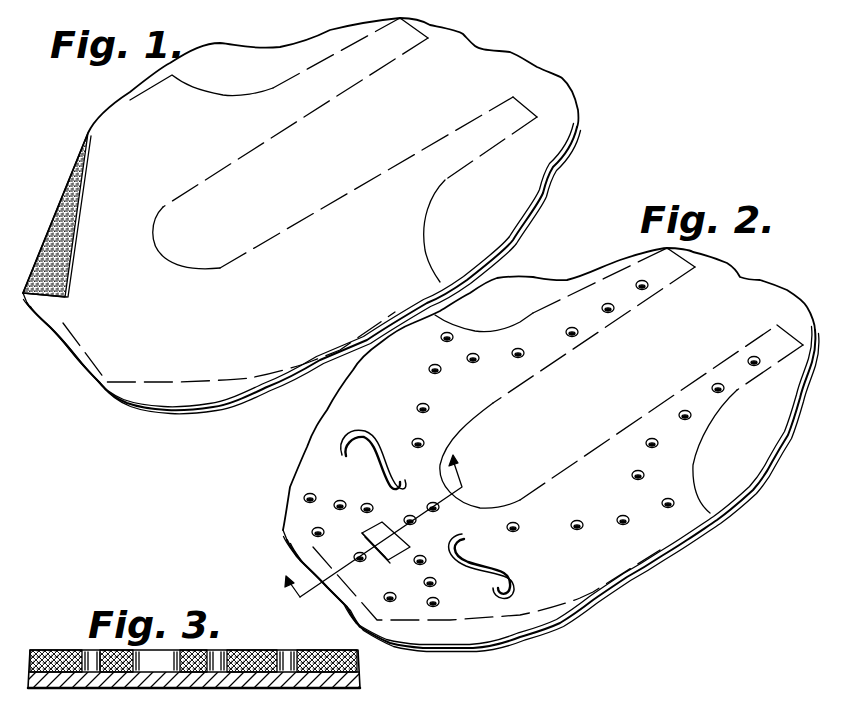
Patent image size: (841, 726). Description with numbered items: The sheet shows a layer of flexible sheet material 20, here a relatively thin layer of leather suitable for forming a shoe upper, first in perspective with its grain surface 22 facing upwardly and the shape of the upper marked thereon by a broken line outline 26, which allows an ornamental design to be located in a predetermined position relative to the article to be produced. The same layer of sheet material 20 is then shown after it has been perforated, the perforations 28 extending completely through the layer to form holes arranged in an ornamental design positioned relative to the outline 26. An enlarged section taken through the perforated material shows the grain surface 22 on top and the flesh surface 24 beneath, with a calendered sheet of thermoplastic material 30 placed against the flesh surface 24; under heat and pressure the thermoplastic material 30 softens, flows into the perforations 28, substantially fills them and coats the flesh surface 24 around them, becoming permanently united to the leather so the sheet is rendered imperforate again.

In FIG. 1, the layer of sheet material 20 is at (575, 66).
In FIG. 2, the layer of sheet material 20 is at (740, 277).
In FIG. 3, the layer of sheet material 20 is at (30, 658).
In FIG. 1, the grain surface 22 is at (538, 152).
In FIG. 2, the grain surface 22 is at (732, 476).
In FIG. 3, the grain surface 22 is at (63, 646).
In FIG. 1, the flesh surface 24 is at (63, 200).
In FIG. 3, the flesh surface 24 is at (267, 678).
In FIG. 1, the broken line outline 26 is at (259, 65).
In FIG. 2, the broken line outline 26 is at (543, 290).
In FIG. 2, the perforations 28 is at (360, 437).
In FIG. 3, the perforations 28 is at (287, 652).
In FIG. 3, the thermoplastic material 30 is at (195, 688).